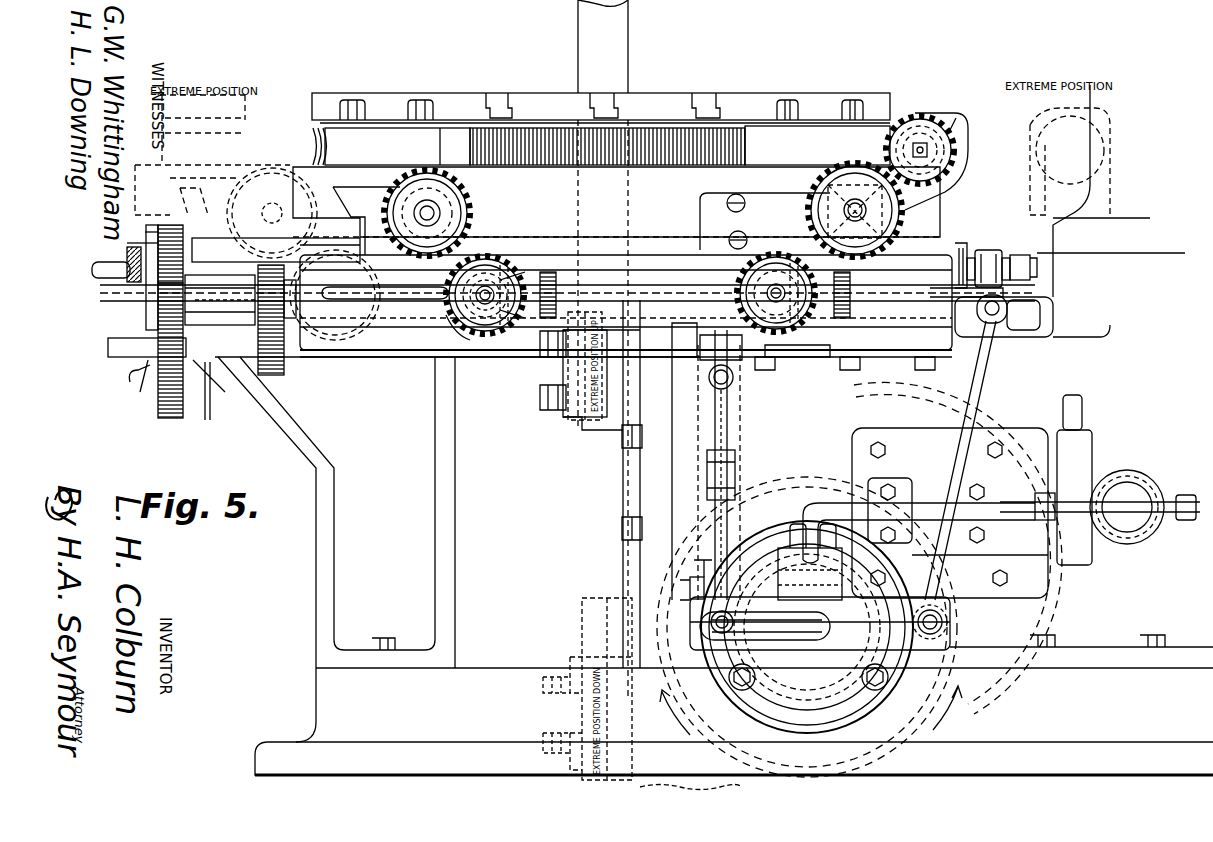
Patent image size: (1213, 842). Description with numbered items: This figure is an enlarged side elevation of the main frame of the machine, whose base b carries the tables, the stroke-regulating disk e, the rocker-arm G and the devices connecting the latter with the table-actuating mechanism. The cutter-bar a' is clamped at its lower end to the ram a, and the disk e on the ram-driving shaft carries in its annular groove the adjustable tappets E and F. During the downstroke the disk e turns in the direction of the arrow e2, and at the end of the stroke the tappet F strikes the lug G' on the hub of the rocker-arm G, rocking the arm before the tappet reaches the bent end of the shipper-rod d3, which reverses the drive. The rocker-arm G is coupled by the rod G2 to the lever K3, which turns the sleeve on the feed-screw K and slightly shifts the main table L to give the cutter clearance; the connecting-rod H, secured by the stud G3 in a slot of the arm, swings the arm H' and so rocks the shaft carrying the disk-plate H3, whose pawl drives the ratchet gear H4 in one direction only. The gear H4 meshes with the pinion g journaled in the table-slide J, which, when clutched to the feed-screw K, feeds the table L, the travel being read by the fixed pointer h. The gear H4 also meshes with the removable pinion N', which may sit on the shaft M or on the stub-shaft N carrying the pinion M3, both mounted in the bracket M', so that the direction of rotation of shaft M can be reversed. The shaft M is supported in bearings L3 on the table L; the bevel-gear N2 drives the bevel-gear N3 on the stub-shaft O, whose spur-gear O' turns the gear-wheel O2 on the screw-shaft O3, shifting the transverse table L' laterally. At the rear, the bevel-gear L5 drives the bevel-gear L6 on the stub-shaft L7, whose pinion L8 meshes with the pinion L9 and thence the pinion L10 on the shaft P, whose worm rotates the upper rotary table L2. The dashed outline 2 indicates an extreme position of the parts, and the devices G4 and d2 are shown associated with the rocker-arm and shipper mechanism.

The cutter-bar a' is at (619, 350).
The rotary table L2 is at (601, 112).
The transverse table L' is at (616, 211).
The gear-wheel O2 is at (470, 206).
The screw-shaft O3 is at (414, 207).
The extreme position 2 is at (226, 176).
The main table L is at (626, 291).
The shaft M is at (567, 283).
The bevel-gear N3 is at (485, 325).
The bevel-gear N2 is at (515, 330).
The stub-shaft O is at (447, 306).
The spur-gear O' is at (440, 355).
The bearings L3 is at (545, 272).
The stub-shaft L7 is at (760, 275).
The pinion L8 is at (818, 326).
The bevel-gear L6 is at (768, 358).
The bevel-gear L5 is at (806, 357).
The pinion L9 is at (910, 216).
The shaft P is at (921, 140).
The pinion L10 is at (958, 153).
The lever K3 is at (990, 262).
The rod G2 is at (982, 430).
The tappet F is at (807, 627).
The arrow e2 is at (859, 579).
The stroke-regulating disk e is at (898, 682).
The tappet E is at (740, 690).
The rocker-arm G is at (808, 619).
The pivot G4 is at (947, 620).
The stud G3 is at (696, 580).
The lug G' is at (797, 548).
The shipper-rod d3 is at (826, 508).
The ring d2 is at (1130, 500).
The connecting-rod H is at (718, 465).
The arm H' is at (705, 377).
The ram a is at (640, 545).
The feed-screw K is at (92, 270).
The pinion N' is at (143, 278).
The gear H4 is at (172, 418).
The stub-shaft N is at (131, 345).
The bracket M' is at (220, 300).
The pinion M3 is at (278, 370).
The table-slide J is at (276, 252).
The fixed pointer h is at (127, 244).
The pinion g is at (145, 230).
The disk-plate H3 is at (146, 384).
The base b is at (714, 566).